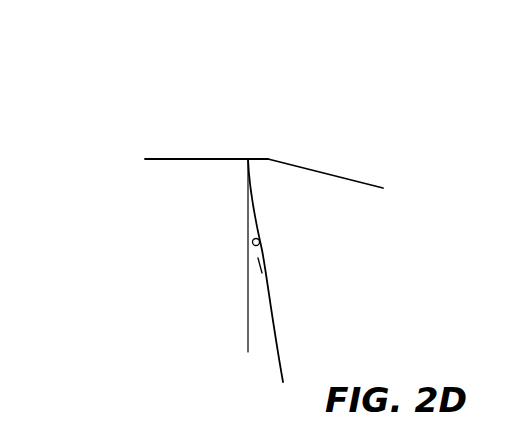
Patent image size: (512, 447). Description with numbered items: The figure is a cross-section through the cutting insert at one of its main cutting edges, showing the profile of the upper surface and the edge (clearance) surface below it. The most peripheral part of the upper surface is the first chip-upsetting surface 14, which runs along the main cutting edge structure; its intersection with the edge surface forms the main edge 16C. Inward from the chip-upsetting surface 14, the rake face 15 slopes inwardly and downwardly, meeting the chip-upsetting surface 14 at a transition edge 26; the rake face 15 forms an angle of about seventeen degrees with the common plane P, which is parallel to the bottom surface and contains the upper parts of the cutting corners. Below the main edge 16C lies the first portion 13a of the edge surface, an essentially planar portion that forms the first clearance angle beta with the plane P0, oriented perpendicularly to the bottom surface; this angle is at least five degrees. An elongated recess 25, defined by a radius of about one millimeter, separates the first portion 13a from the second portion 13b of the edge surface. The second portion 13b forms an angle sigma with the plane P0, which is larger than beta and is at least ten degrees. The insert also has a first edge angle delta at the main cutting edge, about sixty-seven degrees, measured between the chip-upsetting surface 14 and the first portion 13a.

The first portion of the edge surface 13a is at (248, 193).
The second portion of the edge surface 13b is at (278, 360).
The first chip-upsetting surface 14 is at (257, 159).
The rake face 15 is at (357, 180).
The main edge 16C is at (248, 159).
The elongated recess 25 is at (259, 239).
The transition edge 26 is at (268, 159).
The common plane P is at (160, 159).
The plane perpendicular to the bottom surface P0 is at (247, 303).
The first edge angle delta is at (299, 168).
The first clearance angle beta is at (278, 271).
The angle of the second portion sigma is at (273, 347).